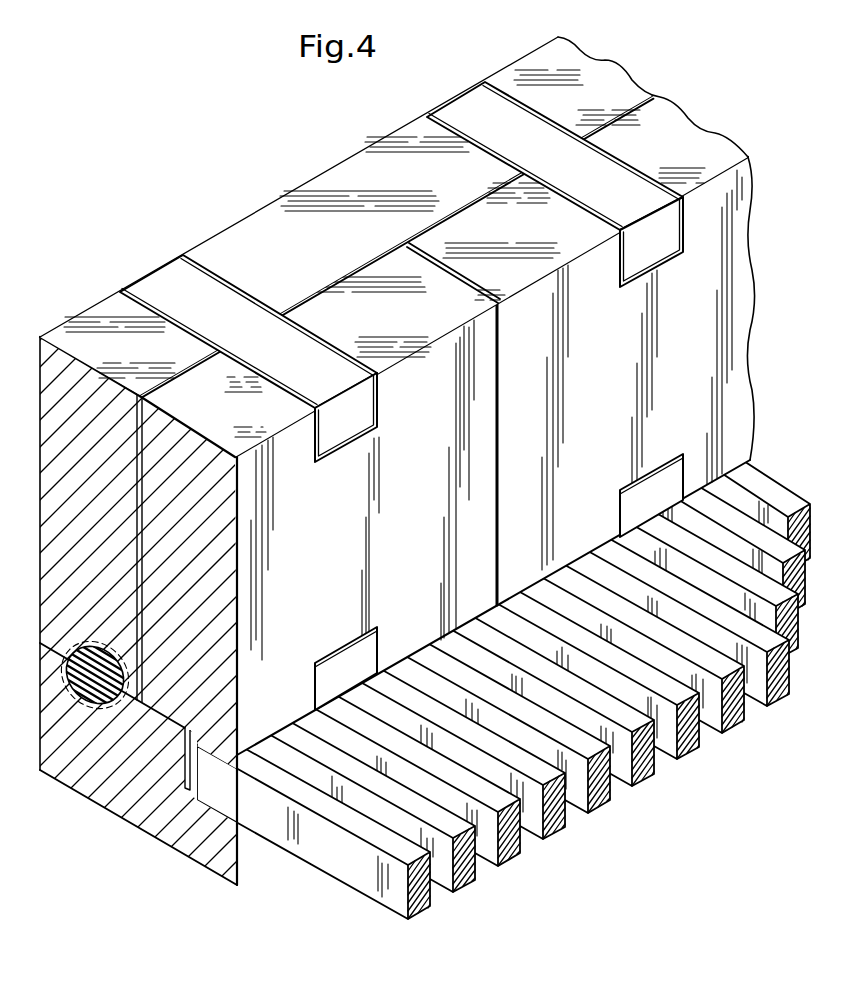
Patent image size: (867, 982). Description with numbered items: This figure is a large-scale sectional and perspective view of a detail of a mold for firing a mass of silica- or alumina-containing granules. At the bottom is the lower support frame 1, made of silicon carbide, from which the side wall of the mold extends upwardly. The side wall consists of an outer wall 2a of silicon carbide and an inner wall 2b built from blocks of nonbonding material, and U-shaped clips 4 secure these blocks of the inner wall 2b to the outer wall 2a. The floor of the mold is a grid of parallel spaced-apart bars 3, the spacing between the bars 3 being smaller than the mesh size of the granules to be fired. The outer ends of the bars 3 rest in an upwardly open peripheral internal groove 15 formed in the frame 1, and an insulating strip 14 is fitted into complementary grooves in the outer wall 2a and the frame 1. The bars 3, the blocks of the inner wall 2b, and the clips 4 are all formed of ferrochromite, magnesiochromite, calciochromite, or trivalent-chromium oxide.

The lower support frame 1 is at (125, 800).
The outer wall 2a is at (277, 217).
The inner wall 2b is at (372, 287).
The grid of parallel spaced-apart bars 3 is at (352, 873).
The U-shaped clips 4 is at (217, 297).
The insulating strip 14 is at (93, 706).
The peripheral internal groove 15 is at (190, 787).